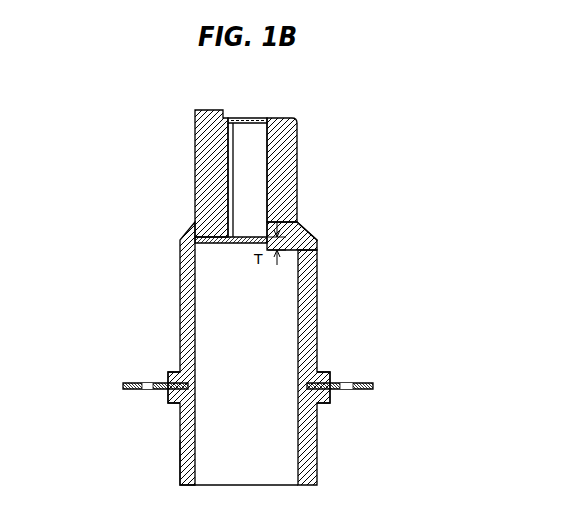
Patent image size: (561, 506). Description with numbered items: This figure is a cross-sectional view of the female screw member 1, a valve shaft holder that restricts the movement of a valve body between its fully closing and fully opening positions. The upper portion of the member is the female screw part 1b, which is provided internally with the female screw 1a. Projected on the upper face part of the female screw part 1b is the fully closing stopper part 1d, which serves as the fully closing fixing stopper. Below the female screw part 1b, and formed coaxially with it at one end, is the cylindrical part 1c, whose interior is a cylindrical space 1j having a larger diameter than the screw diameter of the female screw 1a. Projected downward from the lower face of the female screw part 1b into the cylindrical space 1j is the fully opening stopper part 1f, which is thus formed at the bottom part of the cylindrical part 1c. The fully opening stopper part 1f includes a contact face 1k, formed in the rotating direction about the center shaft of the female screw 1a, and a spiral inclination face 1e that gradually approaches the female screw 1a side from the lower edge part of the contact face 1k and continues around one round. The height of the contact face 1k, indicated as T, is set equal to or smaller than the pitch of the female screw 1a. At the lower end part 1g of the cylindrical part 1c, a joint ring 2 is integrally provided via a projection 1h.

The female screw member 1 is at (238, 281).
The female screw 1a is at (243, 180).
The female screw part 1b is at (298, 171).
The cylindrical part 1c is at (181, 342).
The fully closing stopper part 1d is at (209, 109).
The spiral inclination face 1e is at (233, 244).
The fully opening stopper part 1f is at (289, 249).
The lower end part 1g is at (180, 437).
The projection 1h is at (168, 396).
The cylindrical space 1j is at (233, 311).
The contact face 1k is at (313, 227).
The joint ring 2 is at (135, 383).